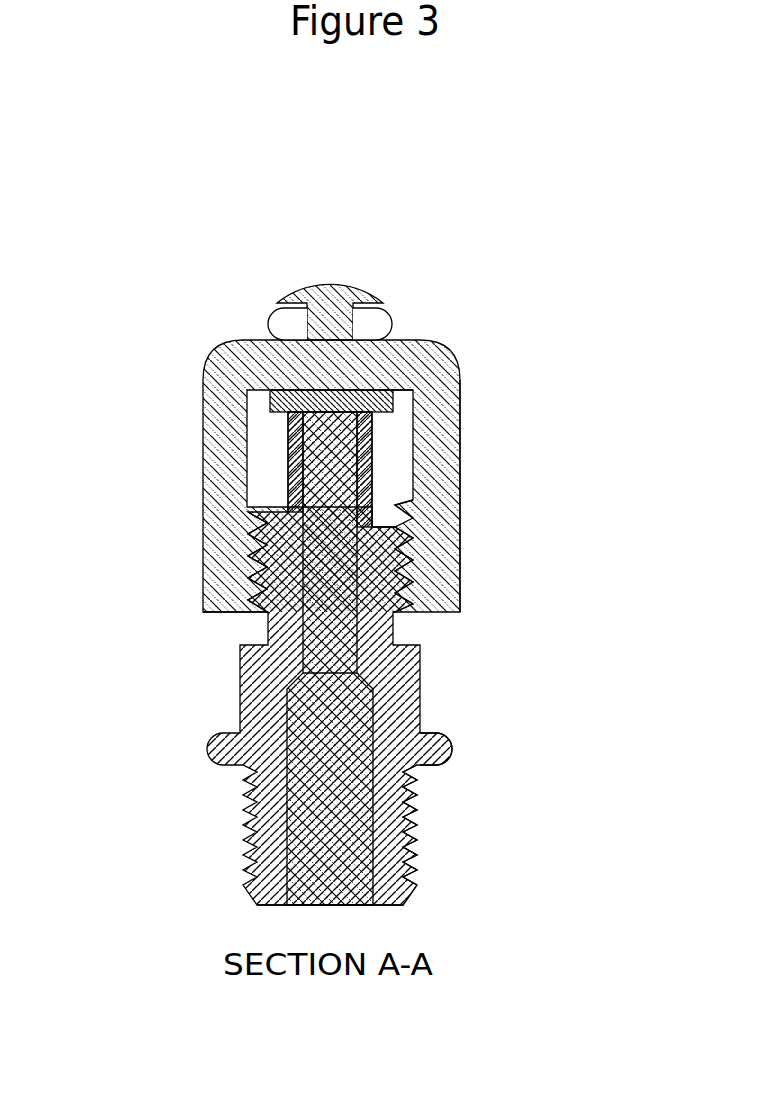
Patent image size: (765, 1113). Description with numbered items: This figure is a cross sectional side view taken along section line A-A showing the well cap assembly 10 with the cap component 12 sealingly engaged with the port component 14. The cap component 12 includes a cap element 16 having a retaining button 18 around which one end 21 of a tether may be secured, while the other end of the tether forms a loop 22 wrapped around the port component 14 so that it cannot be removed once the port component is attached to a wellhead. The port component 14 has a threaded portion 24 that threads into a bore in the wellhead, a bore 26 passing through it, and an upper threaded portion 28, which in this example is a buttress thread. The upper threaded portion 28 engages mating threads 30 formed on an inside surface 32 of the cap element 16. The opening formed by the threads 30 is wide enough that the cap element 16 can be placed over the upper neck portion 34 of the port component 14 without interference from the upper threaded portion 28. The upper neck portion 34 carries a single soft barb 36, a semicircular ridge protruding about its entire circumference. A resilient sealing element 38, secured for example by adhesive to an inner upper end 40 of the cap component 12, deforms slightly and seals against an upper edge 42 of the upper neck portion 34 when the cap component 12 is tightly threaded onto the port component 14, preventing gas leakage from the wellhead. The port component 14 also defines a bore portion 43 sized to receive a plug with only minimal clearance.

The well cap assembly 10 is at (436, 249).
The cap component 12 is at (203, 423).
The port component 14 is at (432, 694).
The cap element 16 is at (437, 482).
The retaining button 18 is at (333, 294).
The end of tether 21 is at (268, 323).
The loop 22 is at (452, 749).
The threaded portion 24 is at (410, 827).
The bore 26 is at (408, 898).
The upper threaded portion 28 is at (413, 602).
The mating threads 30 is at (267, 590).
The inside surface 32 is at (268, 614).
The upper neck portion 34 is at (288, 435).
The soft barb 36 is at (374, 446).
The sealing element 38 is at (288, 392).
The inner upper end 40 is at (413, 393).
The upper edge 42 is at (395, 390).
The bore portion 43 is at (410, 537).